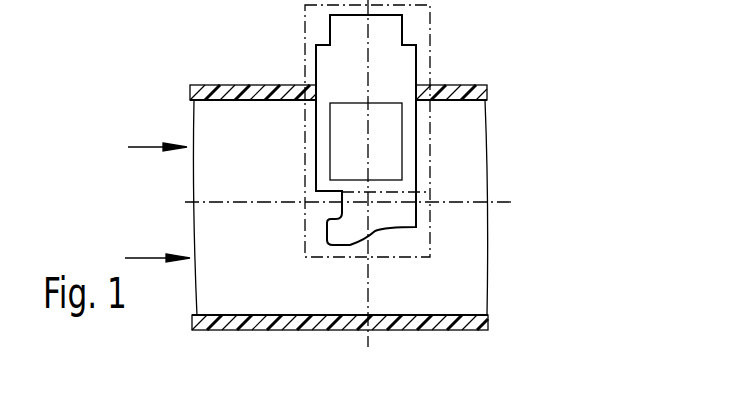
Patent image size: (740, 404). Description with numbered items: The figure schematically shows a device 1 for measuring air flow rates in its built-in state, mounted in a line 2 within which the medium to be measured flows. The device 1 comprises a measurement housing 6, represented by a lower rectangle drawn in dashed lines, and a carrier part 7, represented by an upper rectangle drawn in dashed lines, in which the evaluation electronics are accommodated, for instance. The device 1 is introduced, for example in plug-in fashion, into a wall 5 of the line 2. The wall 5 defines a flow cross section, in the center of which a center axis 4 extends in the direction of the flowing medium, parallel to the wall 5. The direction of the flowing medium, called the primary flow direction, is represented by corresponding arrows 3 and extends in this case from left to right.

The device 1 is at (418, 66).
The line 2 is at (226, 118).
The arrows 3 is at (146, 143).
The center axis 4 is at (505, 202).
The wall 5 is at (470, 86).
The measurement housing 6 is at (430, 233).
The carrier part 7 is at (430, 146).